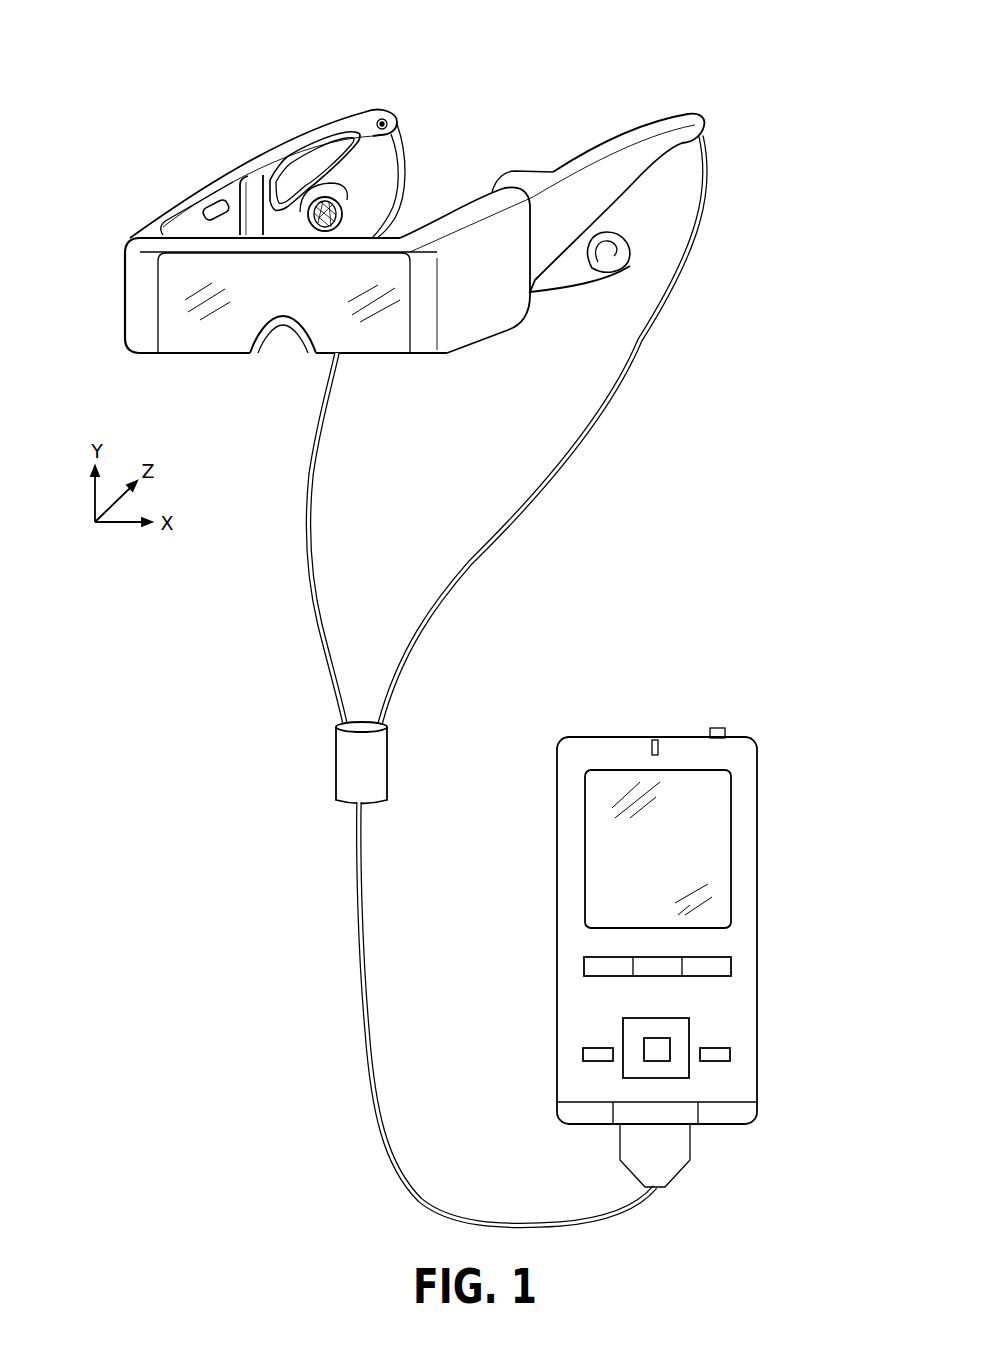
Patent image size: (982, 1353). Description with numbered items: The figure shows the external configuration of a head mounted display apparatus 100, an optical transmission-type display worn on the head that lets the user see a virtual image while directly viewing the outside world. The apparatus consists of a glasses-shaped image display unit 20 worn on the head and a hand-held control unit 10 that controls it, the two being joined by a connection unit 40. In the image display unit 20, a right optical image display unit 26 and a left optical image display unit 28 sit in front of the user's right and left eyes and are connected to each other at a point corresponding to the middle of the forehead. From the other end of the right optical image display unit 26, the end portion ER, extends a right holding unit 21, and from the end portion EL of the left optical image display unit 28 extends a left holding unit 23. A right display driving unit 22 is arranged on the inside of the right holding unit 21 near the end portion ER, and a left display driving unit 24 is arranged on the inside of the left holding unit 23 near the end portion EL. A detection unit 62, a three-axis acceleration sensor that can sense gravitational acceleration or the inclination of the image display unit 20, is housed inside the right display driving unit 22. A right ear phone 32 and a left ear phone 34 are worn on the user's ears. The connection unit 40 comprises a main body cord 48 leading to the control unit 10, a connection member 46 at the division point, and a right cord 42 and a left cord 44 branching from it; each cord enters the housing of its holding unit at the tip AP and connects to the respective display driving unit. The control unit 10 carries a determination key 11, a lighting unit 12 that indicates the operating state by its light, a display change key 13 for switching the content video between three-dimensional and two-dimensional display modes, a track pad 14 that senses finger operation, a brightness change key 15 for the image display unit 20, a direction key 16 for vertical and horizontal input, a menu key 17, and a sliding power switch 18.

The head mounted display apparatus 100 is at (818, 48).
The image display unit 20 is at (728, 100).
The right holding unit 21 is at (293, 102).
The right display driving unit 22 is at (188, 218).
The left holding unit 23 is at (577, 122).
The left display driving unit 24 is at (462, 215).
The right optical image display unit 26 is at (183, 345).
The left optical image display unit 28 is at (370, 348).
The right ear phone 32 is at (343, 182).
The left ear phone 34 is at (630, 258).
The connection unit 40 is at (506, 680).
The right cord 42 is at (323, 443).
The left cord 44 is at (591, 425).
The connection member 46 is at (390, 757).
The main body cord 48 is at (403, 1166).
The detection unit 62 is at (222, 198).
The control unit 10 is at (750, 650).
The determination key 11 is at (650, 1040).
The lighting unit 12 is at (655, 738).
The display change key 13 is at (590, 1053).
The track pad 14 is at (710, 838).
The brightness change key 15 is at (726, 1052).
The direction key 16 is at (680, 1032).
The menu key 17 is at (732, 958).
The power switch 18 is at (717, 726).